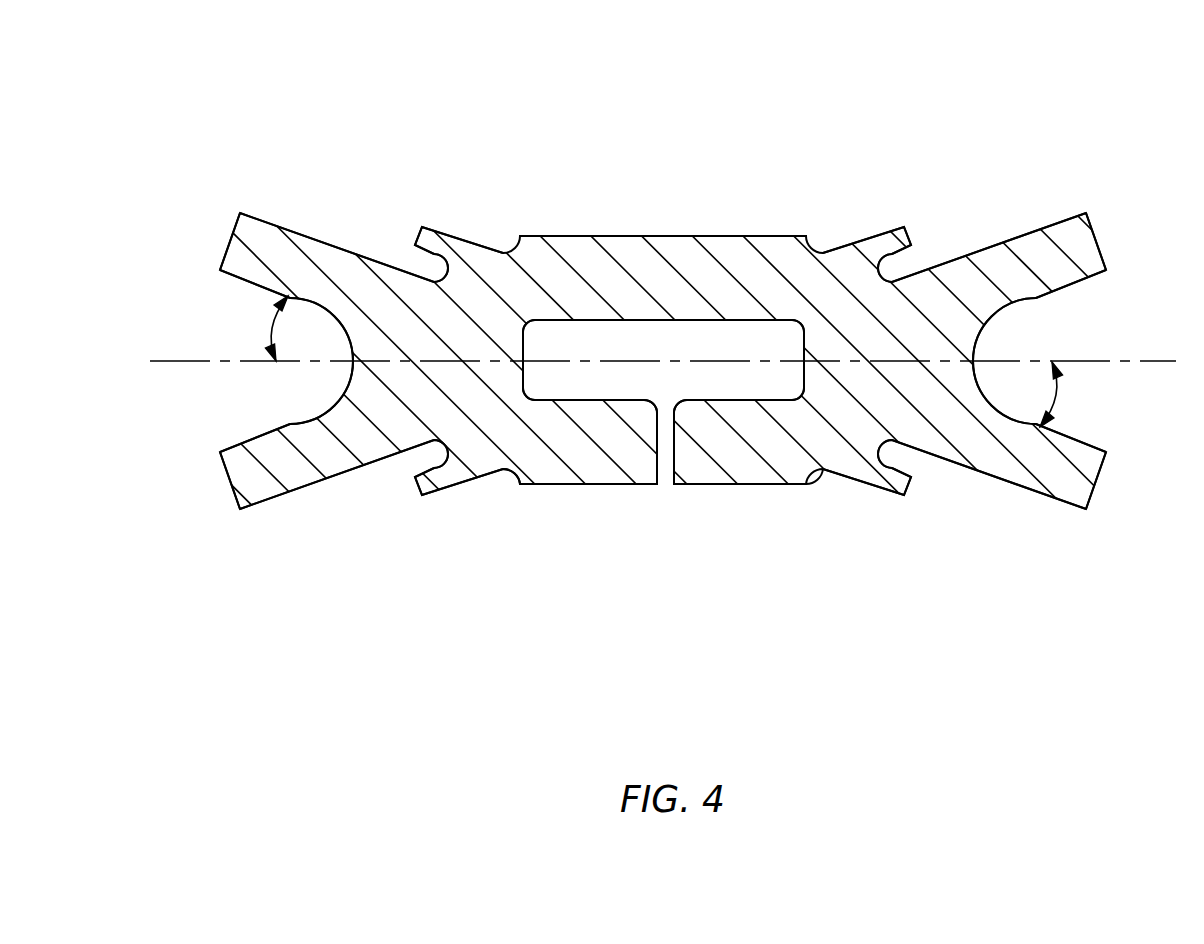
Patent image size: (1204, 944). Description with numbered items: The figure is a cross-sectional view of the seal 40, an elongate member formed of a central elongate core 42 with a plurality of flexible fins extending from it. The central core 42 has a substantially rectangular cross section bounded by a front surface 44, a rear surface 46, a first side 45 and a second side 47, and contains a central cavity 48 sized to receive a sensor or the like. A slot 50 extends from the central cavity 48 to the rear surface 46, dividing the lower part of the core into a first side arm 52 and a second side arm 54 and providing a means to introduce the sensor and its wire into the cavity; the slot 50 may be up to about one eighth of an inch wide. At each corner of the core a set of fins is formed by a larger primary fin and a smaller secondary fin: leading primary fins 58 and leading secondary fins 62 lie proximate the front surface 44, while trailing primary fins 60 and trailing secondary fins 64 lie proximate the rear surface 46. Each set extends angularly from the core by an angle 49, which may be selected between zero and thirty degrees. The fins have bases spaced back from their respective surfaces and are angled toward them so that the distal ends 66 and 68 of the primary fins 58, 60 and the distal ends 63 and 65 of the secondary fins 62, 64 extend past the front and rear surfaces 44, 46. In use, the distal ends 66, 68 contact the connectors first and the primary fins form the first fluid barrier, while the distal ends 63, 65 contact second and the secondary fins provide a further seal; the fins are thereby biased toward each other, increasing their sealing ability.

The seal 40 is at (697, 186).
The central elongate core 42 is at (581, 273).
The front surface 44 is at (767, 236).
The first side 45 is at (879, 360).
The rear surface 46 is at (778, 502).
The second side 47 is at (473, 362).
The central cavity 48 is at (653, 352).
The angle 49 is at (272, 326).
The slot 50 is at (659, 502).
The first side arm 52 is at (740, 457).
The second side arm 54 is at (589, 458).
The leading primary fin 58 is at (318, 256).
The trailing primary fin 60 is at (291, 474).
The leading secondary fin 62 is at (438, 232).
The distal end of leading secondary fin 63 is at (428, 231).
The trailing secondary fin 64 is at (437, 486).
The distal end of trailing secondary fin 65 is at (421, 494).
The distal end of leading primary fin 66 is at (243, 213).
The distal end of trailing primary fin 68 is at (241, 510).